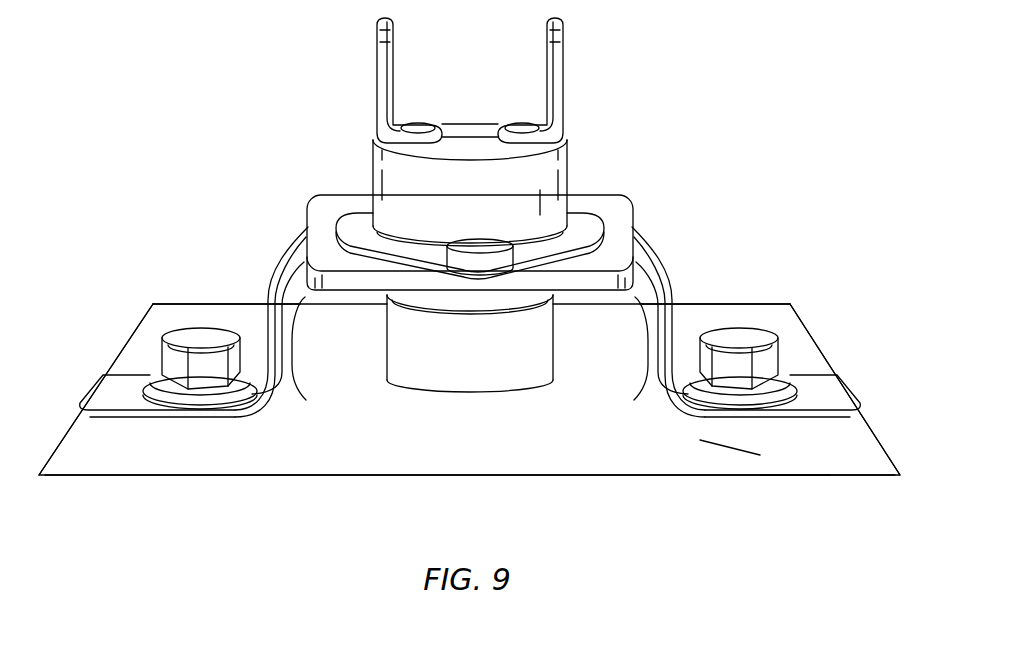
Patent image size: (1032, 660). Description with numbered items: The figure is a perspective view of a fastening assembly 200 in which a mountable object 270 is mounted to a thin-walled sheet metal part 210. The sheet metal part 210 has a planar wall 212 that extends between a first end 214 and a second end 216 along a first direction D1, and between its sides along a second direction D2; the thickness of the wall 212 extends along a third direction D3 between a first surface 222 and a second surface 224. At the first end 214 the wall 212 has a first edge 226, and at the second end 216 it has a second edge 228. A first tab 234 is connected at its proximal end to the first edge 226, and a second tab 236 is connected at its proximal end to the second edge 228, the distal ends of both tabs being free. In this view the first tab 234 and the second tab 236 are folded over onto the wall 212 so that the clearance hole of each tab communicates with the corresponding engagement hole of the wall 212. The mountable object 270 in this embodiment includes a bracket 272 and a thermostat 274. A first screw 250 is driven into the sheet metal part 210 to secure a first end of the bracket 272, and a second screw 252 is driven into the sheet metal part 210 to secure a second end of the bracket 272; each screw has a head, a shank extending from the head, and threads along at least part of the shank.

The fastening assembly 200 is at (208, 235).
The thin-walled sheet metal part 210 is at (696, 286).
The wall 212 is at (224, 477).
The first end 214 is at (49, 492).
The second end 216 is at (899, 481).
The first surface 222 is at (745, 451).
The second surface 224 is at (791, 481).
The first edge 226 is at (123, 328).
The second edge 228 is at (815, 327).
The first tab 234 is at (102, 392).
The second tab 236 is at (837, 390).
The first screw 250 is at (199, 337).
The second screw 252 is at (742, 333).
The mountable object 270 is at (627, 133).
The bracket 272 is at (282, 292).
The thermostat 274 is at (392, 172).
The first direction D1 is at (357, 498).
The second direction D2 is at (860, 296).
The third direction D3 is at (66, 104).